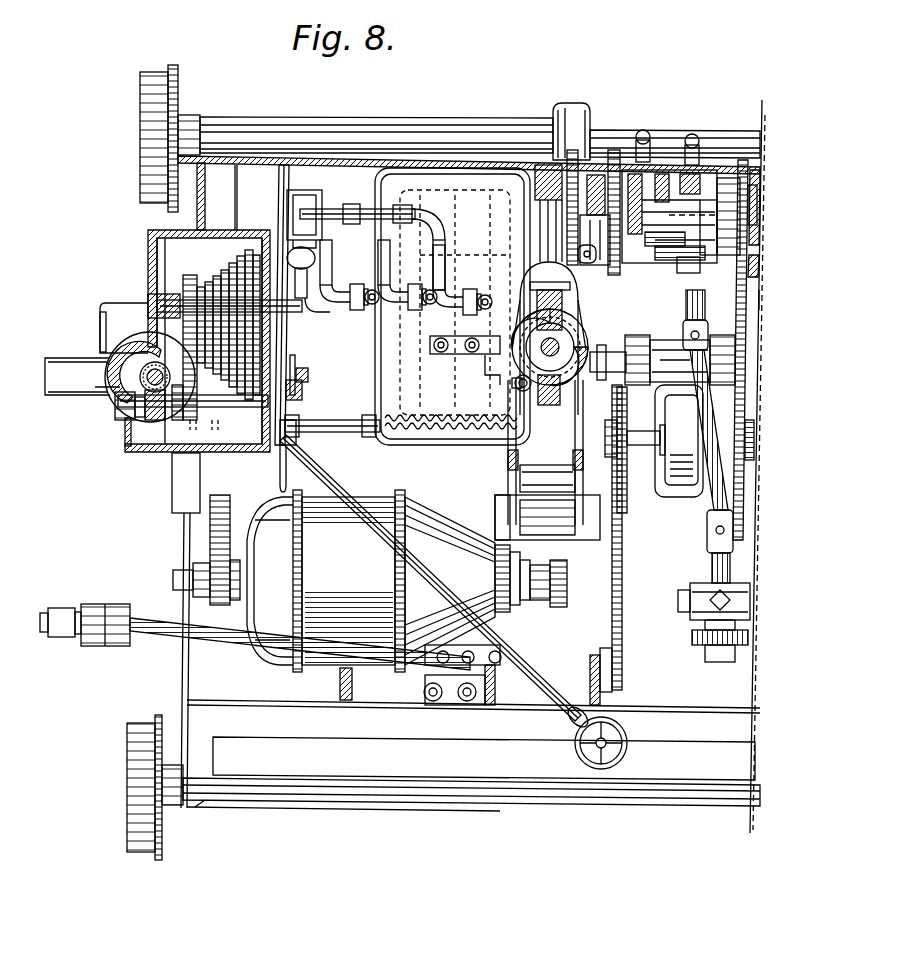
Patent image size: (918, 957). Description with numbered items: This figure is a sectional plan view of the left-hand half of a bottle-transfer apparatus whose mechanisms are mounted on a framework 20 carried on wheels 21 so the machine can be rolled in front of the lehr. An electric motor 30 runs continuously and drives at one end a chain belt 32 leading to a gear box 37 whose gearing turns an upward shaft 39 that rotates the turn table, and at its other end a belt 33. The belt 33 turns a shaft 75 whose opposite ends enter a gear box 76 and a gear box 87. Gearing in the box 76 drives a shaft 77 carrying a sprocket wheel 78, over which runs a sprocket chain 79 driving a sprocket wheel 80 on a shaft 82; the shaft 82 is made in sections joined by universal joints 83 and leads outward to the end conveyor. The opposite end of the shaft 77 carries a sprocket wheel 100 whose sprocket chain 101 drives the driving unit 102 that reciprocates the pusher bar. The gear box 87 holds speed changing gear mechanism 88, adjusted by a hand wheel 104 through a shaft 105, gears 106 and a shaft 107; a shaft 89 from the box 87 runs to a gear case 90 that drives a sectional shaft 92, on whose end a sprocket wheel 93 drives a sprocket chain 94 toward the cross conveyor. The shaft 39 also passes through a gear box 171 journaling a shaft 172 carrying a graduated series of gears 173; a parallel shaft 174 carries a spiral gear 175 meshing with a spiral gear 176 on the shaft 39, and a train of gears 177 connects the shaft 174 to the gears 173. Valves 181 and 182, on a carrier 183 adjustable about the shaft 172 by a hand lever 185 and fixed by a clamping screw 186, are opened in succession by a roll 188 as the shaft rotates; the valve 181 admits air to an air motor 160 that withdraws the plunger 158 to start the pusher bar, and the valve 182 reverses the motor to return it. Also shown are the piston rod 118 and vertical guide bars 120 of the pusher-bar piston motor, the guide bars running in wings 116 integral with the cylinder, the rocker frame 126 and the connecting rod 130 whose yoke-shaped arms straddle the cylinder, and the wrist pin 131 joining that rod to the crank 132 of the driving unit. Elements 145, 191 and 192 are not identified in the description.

The framework 20 is at (400, 728).
The wheels 21 is at (152, 185).
The electric motor 30 is at (375, 497).
The chain belt 32 is at (222, 492).
The belt 33 is at (562, 428).
The gear box 37 is at (118, 320).
The shaft 39 is at (152, 368).
The shaft 75 is at (600, 345).
The gear box 76 is at (680, 342).
The shaft 77 is at (645, 446).
The sprocket wheel 78 is at (618, 418).
The sprocket chain 79 is at (622, 592).
The sprocket wheel 80 is at (615, 688).
The shaft 82 is at (175, 642).
The universal joints 83 is at (68, 605).
The gear box 87 is at (412, 446).
The speed changing gear mechanism 88 is at (455, 302).
The shaft 89 is at (452, 306).
The gear case 90 is at (668, 252).
The sectional shaft 92 is at (698, 302).
The sprocket wheel 93 is at (718, 660).
The sprocket chain 94 is at (700, 637).
The sprocket wheel 100 is at (748, 455).
The sprocket chain 101 is at (759, 300).
The driving unit 102 is at (762, 210).
The hand wheel 104 is at (618, 750).
The shaft 105 is at (505, 652).
The gears 106 is at (296, 435).
The shaft 107 is at (340, 422).
The wings 116 is at (565, 302).
The piston rod 118 is at (558, 340).
The vertical guide bars 120 is at (560, 288).
The rocker frame 126 is at (510, 502).
The connecting rod 130 is at (575, 345).
The wrist pin 131 is at (545, 165).
The crank 132 is at (556, 160).
The block 145 is at (735, 185).
The holding pin or plunger 158 is at (622, 160).
The air motor 160 is at (668, 175).
The gear box 171 is at (165, 237).
The shaft 172 is at (157, 300).
The graduated series of gears 173 is at (215, 278).
The shaft 174 is at (218, 407).
The spiral gear 175 is at (125, 430).
The spiral gear 176 is at (100, 376).
The train of gears 177 is at (176, 416).
The valve 181 is at (312, 207).
The valve 182 is at (306, 258).
The carrier 183 is at (287, 235).
The hand lever 185 is at (300, 398).
The clamping screw 186 is at (302, 375).
The roll 188 is at (300, 355).
The nut 191 is at (650, 145).
The nut 192 is at (700, 147).